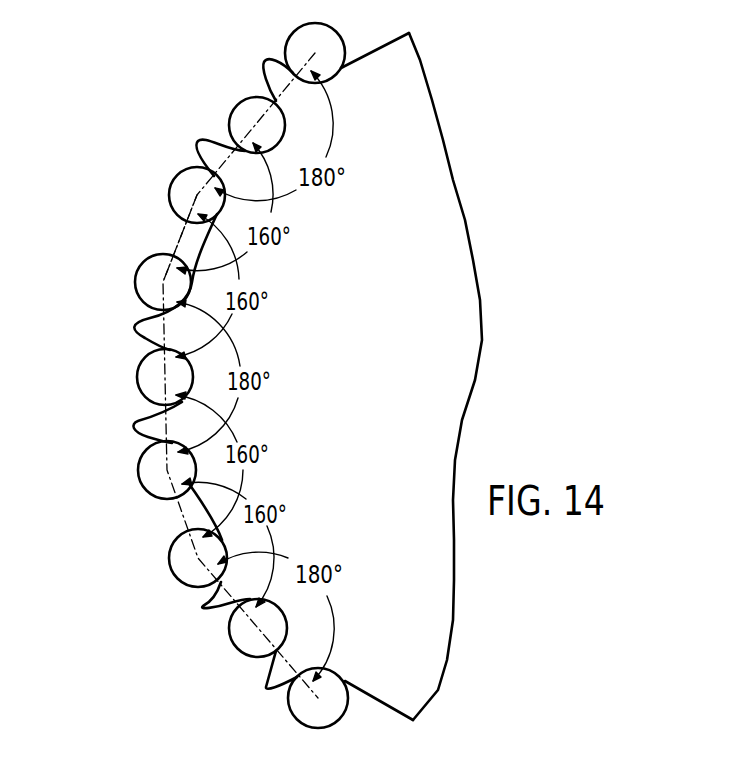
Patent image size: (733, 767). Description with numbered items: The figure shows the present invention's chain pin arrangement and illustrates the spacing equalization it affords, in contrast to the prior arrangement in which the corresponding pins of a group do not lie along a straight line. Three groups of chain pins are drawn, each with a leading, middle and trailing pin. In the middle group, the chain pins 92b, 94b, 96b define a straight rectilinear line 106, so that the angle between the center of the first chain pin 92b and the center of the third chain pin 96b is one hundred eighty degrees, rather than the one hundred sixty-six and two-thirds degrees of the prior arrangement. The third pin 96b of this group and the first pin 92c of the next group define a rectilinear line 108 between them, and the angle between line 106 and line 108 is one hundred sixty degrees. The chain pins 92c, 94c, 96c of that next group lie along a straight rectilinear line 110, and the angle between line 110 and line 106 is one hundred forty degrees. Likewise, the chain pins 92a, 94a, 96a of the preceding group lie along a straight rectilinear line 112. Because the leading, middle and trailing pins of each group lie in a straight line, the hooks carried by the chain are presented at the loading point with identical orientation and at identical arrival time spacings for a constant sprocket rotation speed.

The chain pin 92a is at (305, 705).
The chain pin 92b is at (138, 475).
The chain pin 92c is at (176, 181).
The chain pin 94a is at (246, 641).
The chain pin 94b is at (137, 378).
The chain pin 94c is at (245, 108).
The chain pin 96a is at (175, 562).
The chain pin 96b is at (140, 282).
The chain pin 96c is at (307, 34).
The rectilinear line 106 is at (135, 329).
The rectilinear line 108 is at (183, 239).
The rectilinear line 110 is at (249, 140).
The rectilinear line 112 is at (200, 607).